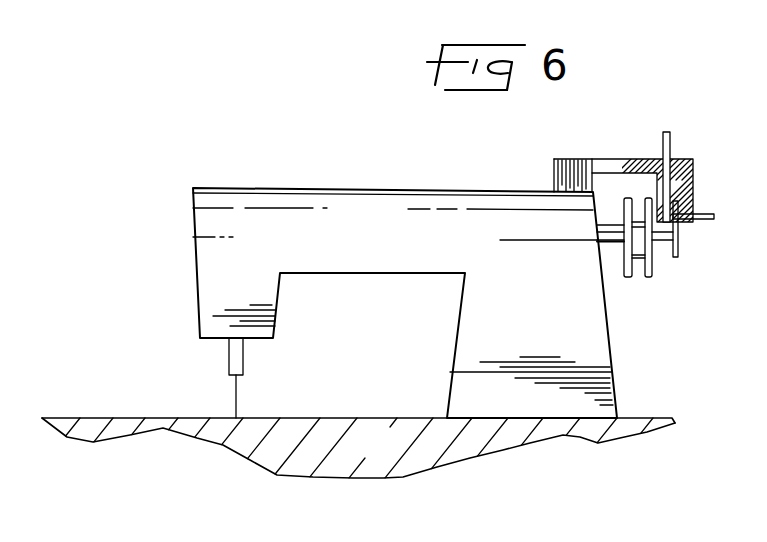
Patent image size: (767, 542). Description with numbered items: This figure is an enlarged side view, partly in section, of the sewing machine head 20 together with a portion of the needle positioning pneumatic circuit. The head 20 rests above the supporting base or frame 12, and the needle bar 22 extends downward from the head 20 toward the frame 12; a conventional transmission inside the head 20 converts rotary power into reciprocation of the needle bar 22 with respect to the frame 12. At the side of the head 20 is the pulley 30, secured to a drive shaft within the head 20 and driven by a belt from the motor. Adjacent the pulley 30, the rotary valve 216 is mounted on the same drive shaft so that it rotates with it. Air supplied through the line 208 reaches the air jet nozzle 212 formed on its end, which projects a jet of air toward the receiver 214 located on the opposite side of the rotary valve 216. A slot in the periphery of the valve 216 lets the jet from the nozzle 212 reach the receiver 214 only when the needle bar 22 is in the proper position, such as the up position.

The supporting base or frame 12 is at (398, 457).
The sewing machine head 20 is at (370, 197).
The needle bar 22 is at (244, 363).
The pulley 30 is at (643, 268).
The line 208 is at (670, 147).
The air jet nozzle 212 is at (663, 240).
The receiver 214 is at (693, 190).
The rotary valve 216 is at (677, 245).